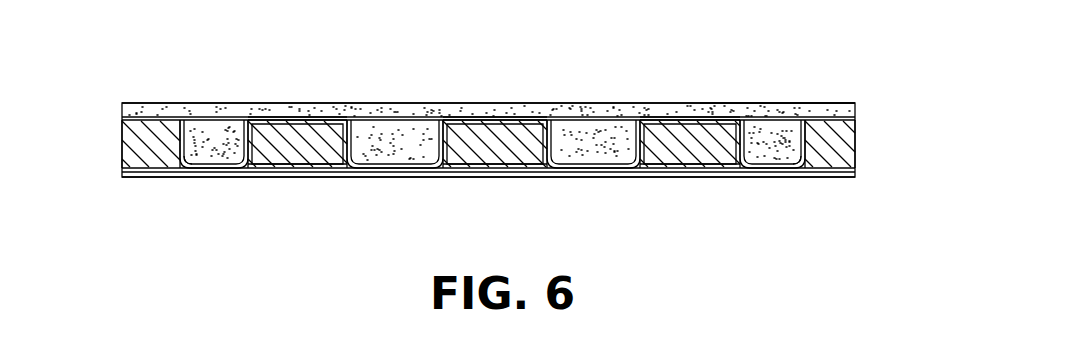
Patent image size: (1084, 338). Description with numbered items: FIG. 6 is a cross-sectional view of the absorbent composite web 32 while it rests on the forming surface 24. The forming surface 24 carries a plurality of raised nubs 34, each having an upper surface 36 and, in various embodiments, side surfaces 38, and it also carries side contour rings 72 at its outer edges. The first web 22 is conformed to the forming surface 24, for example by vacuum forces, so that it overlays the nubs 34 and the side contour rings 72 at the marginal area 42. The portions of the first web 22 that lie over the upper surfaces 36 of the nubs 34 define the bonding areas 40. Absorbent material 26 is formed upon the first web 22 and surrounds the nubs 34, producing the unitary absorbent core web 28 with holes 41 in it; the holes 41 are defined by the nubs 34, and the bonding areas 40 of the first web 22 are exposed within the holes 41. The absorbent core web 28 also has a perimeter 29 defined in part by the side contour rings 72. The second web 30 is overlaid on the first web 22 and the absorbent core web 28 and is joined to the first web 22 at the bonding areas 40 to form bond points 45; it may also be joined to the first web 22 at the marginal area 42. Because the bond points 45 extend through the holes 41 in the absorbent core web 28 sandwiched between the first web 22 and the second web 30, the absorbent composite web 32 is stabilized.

The first web 22 is at (122, 128).
The forming surface 24 is at (122, 174).
The absorbent material 26 is at (380, 150).
The unitary absorbent core web 28 is at (388, 128).
The perimeter 29 is at (183, 168).
The second web 30 is at (122, 104).
The absorbent composite web 32 is at (782, 92).
The raised nubs 34 is at (286, 156).
The upper surfaces 36 is at (325, 156).
The side surfaces 38 is at (458, 172).
The bonding areas 40 is at (292, 119).
The holes 41 is at (275, 96).
The marginal area 42 is at (140, 104).
The bond points 45 is at (328, 114).
The side contour rings 72 is at (150, 160).